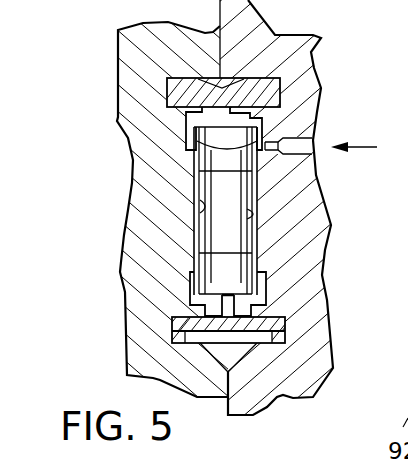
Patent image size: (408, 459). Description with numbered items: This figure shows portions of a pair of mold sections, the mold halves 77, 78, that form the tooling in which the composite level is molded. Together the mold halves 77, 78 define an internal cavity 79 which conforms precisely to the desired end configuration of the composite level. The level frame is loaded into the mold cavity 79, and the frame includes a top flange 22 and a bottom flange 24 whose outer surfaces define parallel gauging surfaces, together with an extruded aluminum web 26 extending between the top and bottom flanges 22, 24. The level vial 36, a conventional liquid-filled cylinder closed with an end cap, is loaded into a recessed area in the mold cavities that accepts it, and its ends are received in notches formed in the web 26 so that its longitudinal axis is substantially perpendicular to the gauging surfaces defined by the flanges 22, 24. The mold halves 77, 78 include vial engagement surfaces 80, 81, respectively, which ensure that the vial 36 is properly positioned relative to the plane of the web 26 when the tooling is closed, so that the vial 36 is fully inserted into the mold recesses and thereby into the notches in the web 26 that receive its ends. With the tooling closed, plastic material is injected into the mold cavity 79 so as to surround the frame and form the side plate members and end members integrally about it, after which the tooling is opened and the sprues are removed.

The top flange 22 is at (273, 88).
The bottom flange 24 is at (278, 333).
The web 26 is at (240, 304).
The level vial 36 is at (251, 190).
The mold half 77 is at (119, 93).
The mold half 78 is at (322, 96).
The internal cavity 79 is at (187, 133).
The vial engagement surface 80 is at (201, 200).
The vial engagement surface 81 is at (258, 222).